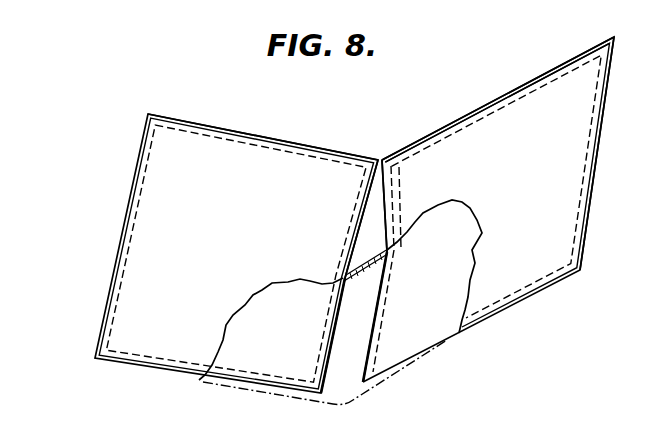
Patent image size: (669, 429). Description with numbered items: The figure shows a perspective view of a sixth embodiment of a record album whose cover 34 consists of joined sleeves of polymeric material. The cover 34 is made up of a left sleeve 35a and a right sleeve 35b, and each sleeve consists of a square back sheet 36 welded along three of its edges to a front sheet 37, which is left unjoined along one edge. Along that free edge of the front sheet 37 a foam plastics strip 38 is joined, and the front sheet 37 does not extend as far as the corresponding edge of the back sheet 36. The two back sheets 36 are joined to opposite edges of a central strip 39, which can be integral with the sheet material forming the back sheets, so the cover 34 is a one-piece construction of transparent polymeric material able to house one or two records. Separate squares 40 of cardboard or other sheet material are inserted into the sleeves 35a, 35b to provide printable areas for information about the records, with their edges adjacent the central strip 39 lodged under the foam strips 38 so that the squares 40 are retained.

The cover 34 is at (506, 91).
The left sleeve 35a is at (253, 153).
The right sleeve 35b is at (562, 198).
The back sheet 36 is at (332, 152).
The front sheet 37 is at (162, 178).
The foam plastics strip 38 is at (341, 275).
The central strip 39 is at (381, 160).
The squares 40 is at (264, 364).